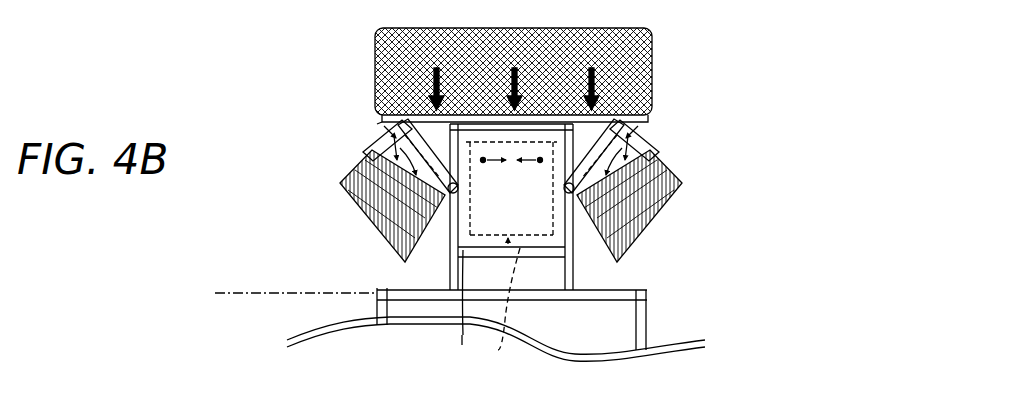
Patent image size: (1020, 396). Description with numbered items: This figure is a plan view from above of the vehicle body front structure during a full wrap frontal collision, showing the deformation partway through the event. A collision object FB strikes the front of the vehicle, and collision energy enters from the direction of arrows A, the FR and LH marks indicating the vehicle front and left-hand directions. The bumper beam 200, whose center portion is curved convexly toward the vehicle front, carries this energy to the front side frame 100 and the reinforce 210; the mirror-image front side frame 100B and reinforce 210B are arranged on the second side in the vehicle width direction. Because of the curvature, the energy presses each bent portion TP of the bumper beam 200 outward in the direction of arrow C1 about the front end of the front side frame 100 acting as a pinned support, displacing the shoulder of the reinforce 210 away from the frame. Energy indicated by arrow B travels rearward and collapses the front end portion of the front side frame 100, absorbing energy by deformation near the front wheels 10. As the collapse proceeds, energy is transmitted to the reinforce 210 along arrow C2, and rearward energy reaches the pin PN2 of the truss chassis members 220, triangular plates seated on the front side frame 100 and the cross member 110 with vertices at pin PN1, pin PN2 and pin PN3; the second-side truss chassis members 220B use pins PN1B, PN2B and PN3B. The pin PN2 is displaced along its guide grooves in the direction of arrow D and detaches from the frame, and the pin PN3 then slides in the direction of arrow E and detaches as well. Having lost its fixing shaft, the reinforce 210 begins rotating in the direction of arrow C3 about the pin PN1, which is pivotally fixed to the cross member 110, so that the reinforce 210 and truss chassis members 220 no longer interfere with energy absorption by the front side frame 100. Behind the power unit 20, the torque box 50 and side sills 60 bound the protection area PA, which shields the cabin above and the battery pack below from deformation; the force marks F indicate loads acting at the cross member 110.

The bumper beam 200 is at (563, 108).
The reinforce 210 is at (650, 140).
The reinforce 210B is at (384, 118).
The bent portion TP is at (366, 118).
The front wheel 10 is at (400, 258).
The pin PN3B is at (440, 201).
The pin PN3 is at (582, 208).
The arrow E is at (450, 192).
The arrow C1 is at (384, 128).
The arrow C2 is at (365, 150).
The arrow C3 is at (385, 162).
The arrow D is at (447, 192).
The cross member 110 is at (682, 279).
The force F is at (482, 158).
The pin PN1 is at (506, 166).
The pin PN1B is at (530, 166).
The truss chassis member 220 is at (566, 246).
The truss chassis member 220B is at (463, 340).
The power unit 20 is at (505, 319).
The front side frame 100 is at (647, 294).
The front side frame 100B is at (450, 290).
The torque box 50 is at (648, 300).
The side sill 60 is at (372, 318).
The protection area PA is at (228, 298).
The pin PN2 is at (519, 128).
The pin PN2B is at (397, 120).
The arrow A is at (438, 112).
The arrow B is at (453, 116).
The collision object FB is at (636, 44).
The front direction FR is at (826, 256).
The left-hand direction LH is at (828, 290).